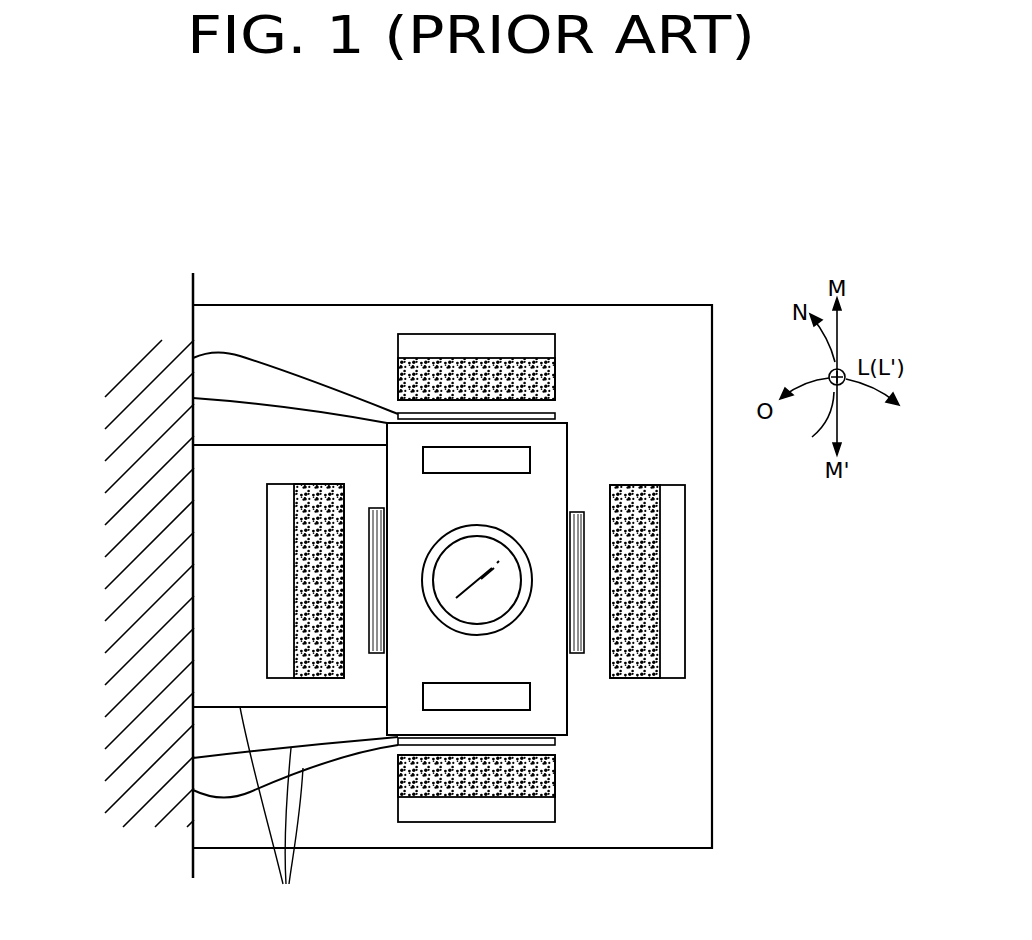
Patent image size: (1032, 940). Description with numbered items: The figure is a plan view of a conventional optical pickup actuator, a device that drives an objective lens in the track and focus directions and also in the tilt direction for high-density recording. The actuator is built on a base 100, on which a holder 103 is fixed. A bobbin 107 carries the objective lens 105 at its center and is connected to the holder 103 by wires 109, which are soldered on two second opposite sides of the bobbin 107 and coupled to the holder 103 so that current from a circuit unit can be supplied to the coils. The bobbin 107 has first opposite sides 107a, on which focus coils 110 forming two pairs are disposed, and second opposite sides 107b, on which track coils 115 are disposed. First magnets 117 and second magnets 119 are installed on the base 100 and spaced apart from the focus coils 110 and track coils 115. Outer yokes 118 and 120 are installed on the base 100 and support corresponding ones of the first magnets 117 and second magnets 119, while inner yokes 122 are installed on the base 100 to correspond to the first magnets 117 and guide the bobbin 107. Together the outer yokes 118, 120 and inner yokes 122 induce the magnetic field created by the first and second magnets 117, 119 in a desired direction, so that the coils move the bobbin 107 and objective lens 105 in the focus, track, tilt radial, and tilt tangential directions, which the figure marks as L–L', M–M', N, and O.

The base 100 is at (452, 305).
The holder 103 is at (127, 378).
The objective lens 105 is at (503, 602).
The bobbin 107 is at (553, 698).
The first opposite sides 107a is at (567, 423).
The second opposite sides 107b is at (567, 478).
The wires 109 is at (295, 634).
The focus coils 110 is at (557, 413).
The track coils 115 is at (583, 538).
The first magnets 117 is at (399, 371).
The outer yokes 118 is at (530, 340).
The second magnets 119 is at (318, 570).
The outer yokes 120 is at (282, 635).
The inner yokes 122 is at (530, 460).